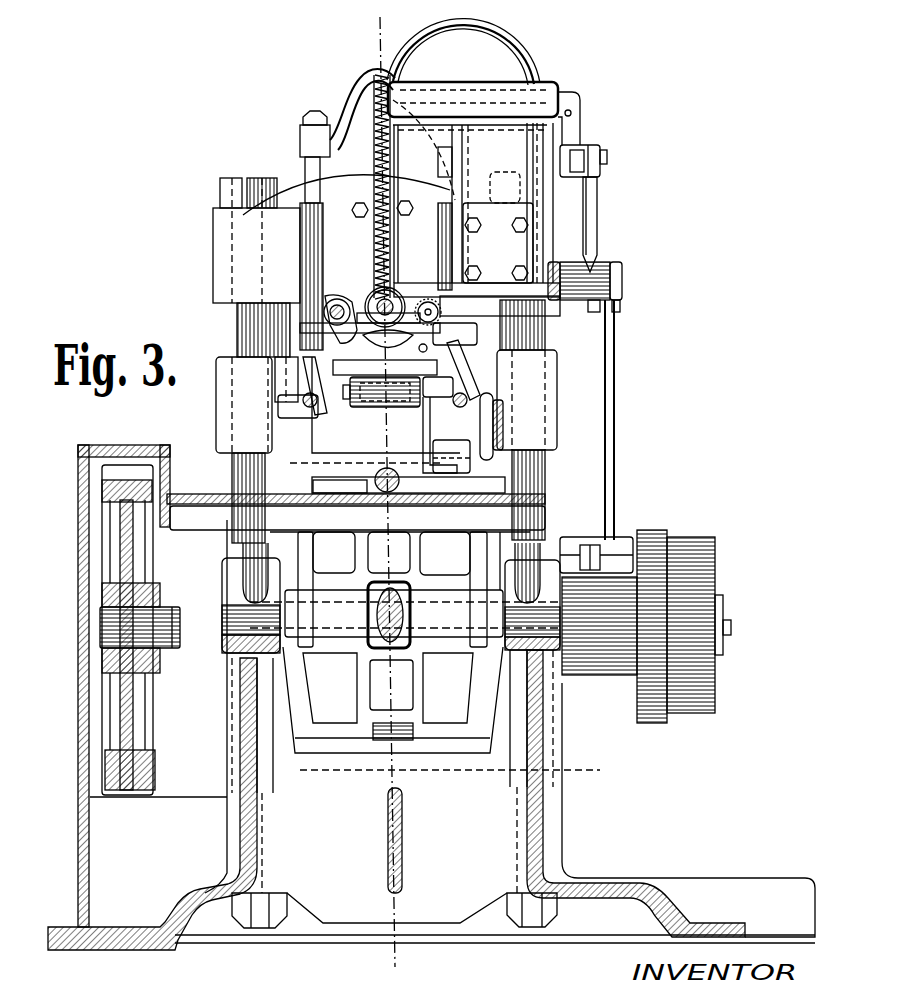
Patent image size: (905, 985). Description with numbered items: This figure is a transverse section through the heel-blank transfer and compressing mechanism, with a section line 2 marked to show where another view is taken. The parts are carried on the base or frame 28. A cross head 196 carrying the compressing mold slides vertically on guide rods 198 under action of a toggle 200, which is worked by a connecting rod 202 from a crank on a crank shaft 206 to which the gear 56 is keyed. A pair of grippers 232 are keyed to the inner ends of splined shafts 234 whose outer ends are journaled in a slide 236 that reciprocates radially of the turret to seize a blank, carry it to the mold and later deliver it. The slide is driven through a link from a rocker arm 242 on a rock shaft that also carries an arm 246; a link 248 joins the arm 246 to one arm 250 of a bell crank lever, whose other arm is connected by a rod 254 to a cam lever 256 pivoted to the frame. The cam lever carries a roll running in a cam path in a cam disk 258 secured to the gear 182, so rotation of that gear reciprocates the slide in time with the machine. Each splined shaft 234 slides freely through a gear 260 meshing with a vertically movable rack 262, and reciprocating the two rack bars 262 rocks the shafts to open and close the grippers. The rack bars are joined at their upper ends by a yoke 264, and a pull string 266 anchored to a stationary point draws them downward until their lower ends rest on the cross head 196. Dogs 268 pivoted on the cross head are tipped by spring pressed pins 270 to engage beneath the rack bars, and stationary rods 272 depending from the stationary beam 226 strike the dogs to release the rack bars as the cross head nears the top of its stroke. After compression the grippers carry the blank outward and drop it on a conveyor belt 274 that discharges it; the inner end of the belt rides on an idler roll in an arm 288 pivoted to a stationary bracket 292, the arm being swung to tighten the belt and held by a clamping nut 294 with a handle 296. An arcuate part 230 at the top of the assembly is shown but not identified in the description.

The section line 2 is at (377, 17).
The base or frame 28 is at (548, 766).
The gear 56 is at (160, 772).
The gear 182 is at (706, 618).
The cross head 196 is at (225, 410).
The guide rods 198 is at (240, 472).
The toggle 200 is at (370, 670).
The connecting rod 202 is at (412, 637).
The crank shaft 206 is at (173, 605).
The stationary beam 226 is at (284, 230).
The arm 230 is at (493, 37).
The grippers 232 is at (373, 392).
The shafts 234 is at (336, 298).
The slide 236 is at (410, 296).
The rocker arm 242 is at (472, 138).
The arm 246 is at (573, 140).
The link 248 is at (590, 158).
The arm of bell crank lever 250 is at (594, 210).
The rod 254 is at (612, 383).
The cam lever 256 is at (623, 538).
The cam disk 258 is at (656, 593).
The gear 260 is at (435, 300).
The rack bars 262 is at (462, 322).
The yoke 264 is at (347, 90).
The pull string 266 is at (374, 130).
The dogs 268 is at (288, 378).
The spring pressed pins 270 is at (283, 412).
The stationary rods 272 is at (288, 340).
The conveyor belt 274 is at (378, 410).
The arm 288 is at (427, 432).
The stationary bracket 292 is at (433, 452).
The clamping nut 294 is at (490, 457).
The handle 296 is at (497, 418).